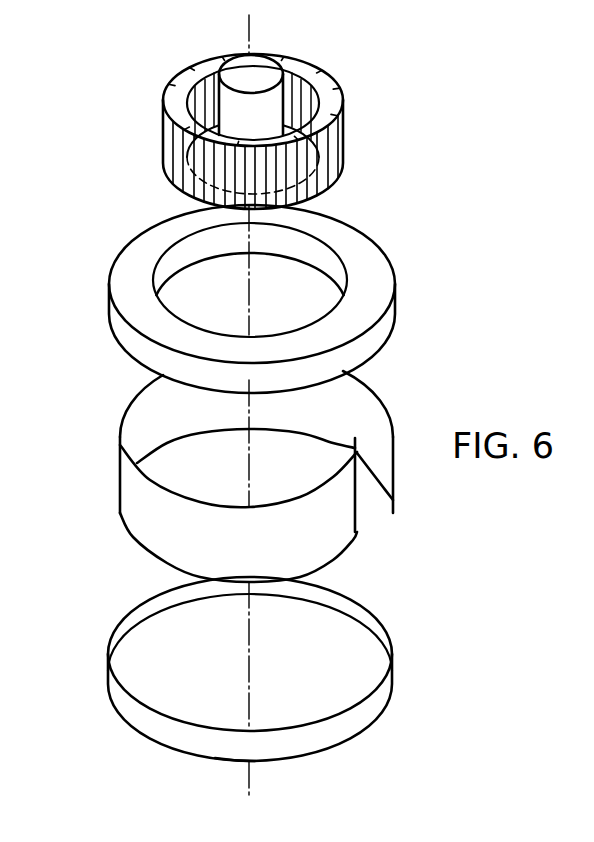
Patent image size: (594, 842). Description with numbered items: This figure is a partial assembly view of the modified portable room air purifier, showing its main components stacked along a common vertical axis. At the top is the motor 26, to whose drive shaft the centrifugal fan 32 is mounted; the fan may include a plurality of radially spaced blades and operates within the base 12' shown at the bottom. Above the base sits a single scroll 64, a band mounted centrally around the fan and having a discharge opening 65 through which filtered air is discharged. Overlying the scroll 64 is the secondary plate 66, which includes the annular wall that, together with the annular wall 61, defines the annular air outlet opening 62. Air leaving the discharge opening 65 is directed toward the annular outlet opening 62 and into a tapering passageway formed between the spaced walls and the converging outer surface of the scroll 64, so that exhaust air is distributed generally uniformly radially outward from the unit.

The motor 26 is at (277, 108).
The centrifugal fan 32 is at (345, 153).
The secondary plate 66 is at (370, 258).
The annular air outlet opening 62 is at (375, 330).
The scroll 64 is at (139, 547).
The discharge opening 65 is at (372, 487).
The annular wall 61 is at (363, 707).
The base 12' is at (210, 776).